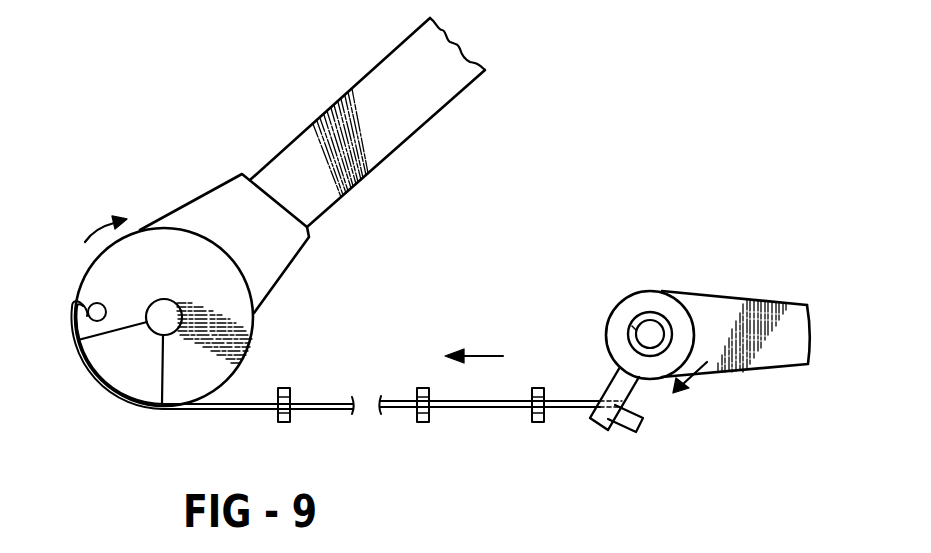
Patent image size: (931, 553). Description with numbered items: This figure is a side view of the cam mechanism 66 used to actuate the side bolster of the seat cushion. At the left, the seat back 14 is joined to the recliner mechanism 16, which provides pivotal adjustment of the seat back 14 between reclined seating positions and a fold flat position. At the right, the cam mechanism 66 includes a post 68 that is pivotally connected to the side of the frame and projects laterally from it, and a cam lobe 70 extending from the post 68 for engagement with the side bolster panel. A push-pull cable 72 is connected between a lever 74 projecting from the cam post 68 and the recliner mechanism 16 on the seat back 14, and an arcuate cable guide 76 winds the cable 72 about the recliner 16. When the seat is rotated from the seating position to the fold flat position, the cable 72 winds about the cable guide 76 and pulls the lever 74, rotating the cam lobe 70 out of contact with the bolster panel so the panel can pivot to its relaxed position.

The seat back 14 is at (447, 93).
The recliner mechanism 16 is at (165, 247).
The cam mechanism 66 is at (733, 296).
The post 68 is at (608, 318).
The cam lobe 70 is at (767, 360).
The push-pull cable 72 is at (475, 408).
The lever 74 is at (610, 430).
The arcuate cable guide 76 is at (107, 375).